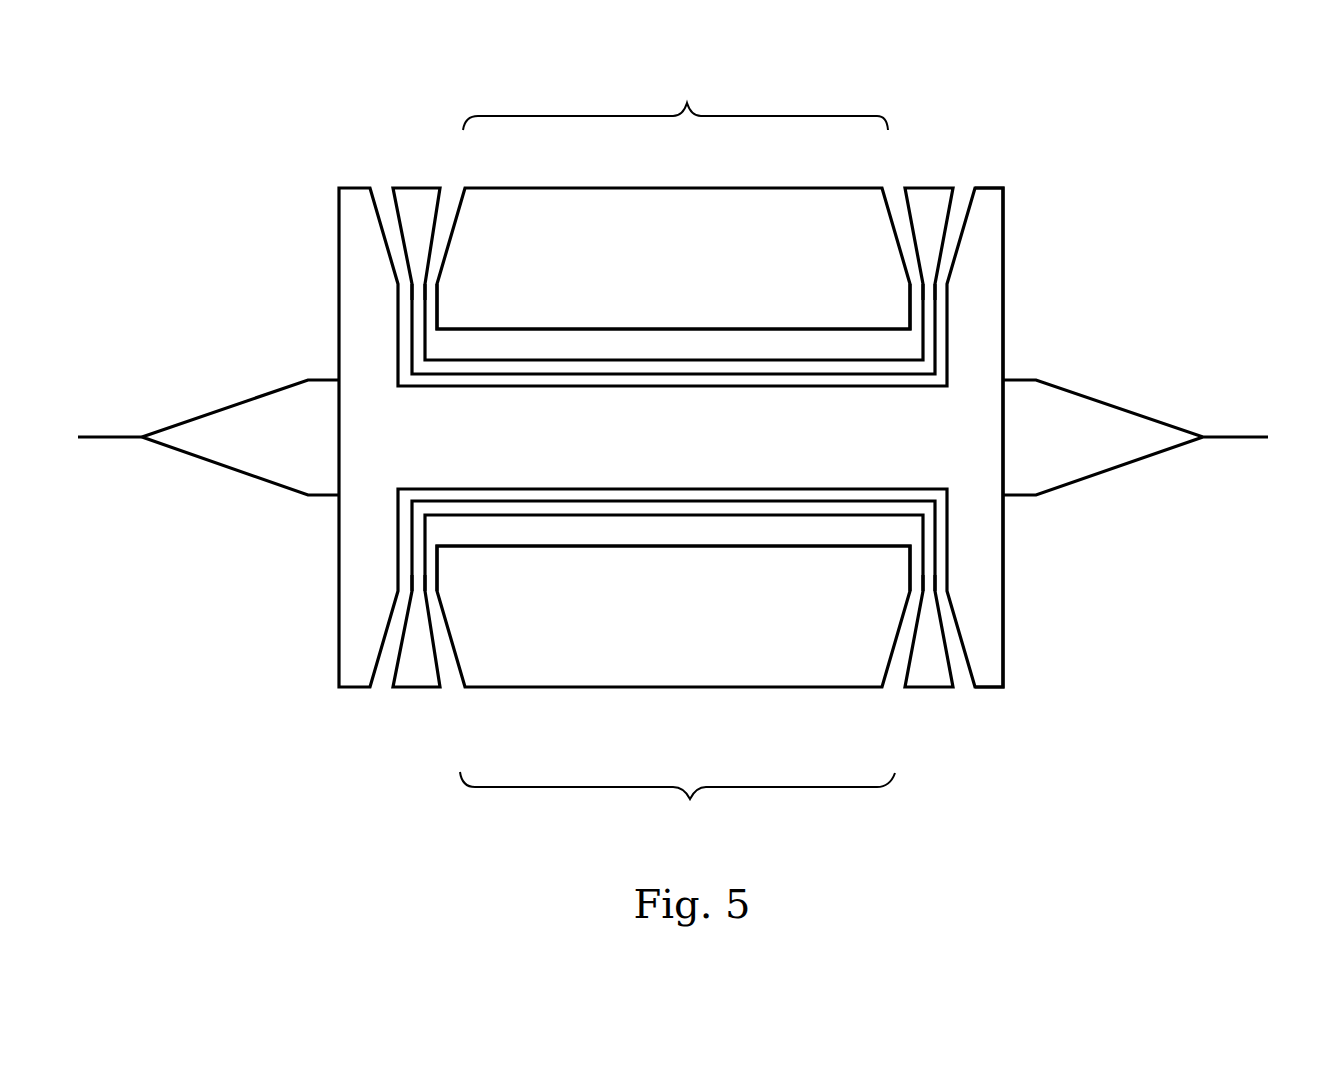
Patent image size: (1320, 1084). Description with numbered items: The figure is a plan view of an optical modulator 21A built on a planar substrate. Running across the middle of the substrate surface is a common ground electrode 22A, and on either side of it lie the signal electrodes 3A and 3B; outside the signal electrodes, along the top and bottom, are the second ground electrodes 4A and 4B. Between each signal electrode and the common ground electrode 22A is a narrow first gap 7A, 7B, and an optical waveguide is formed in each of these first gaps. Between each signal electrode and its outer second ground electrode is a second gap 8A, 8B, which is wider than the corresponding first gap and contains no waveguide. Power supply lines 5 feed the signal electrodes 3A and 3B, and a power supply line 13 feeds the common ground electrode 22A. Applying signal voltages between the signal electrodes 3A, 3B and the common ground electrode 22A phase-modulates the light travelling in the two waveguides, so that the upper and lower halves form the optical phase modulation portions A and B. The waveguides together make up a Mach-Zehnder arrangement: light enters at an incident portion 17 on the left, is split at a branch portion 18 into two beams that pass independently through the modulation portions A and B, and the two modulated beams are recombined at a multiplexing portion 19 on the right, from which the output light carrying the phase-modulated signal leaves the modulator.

The optical modulator 21A is at (1035, 208).
The common ground electrode 22A is at (668, 445).
The power supply line to the common ground electrode 13 is at (987, 202).
The power supply lines to the signal electrodes 5 is at (413, 200).
The first gap 7A is at (782, 390).
The first gap 7B is at (881, 483).
The signal electrode 3A is at (635, 367).
The signal electrode 3B is at (602, 508).
The second gap 8A is at (802, 327).
The second gap 8B is at (763, 550).
The second ground electrode 4A is at (702, 206).
The second ground electrode 4B is at (685, 678).
The incident portion 17 is at (105, 436).
The branch portion 18 is at (210, 408).
The multiplexing portion 19 is at (1228, 435).
The optical phase modulation portion A is at (675, 98).
The optical phase modulation portion B is at (677, 805).